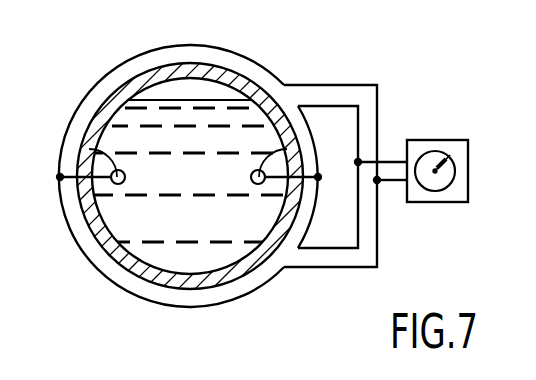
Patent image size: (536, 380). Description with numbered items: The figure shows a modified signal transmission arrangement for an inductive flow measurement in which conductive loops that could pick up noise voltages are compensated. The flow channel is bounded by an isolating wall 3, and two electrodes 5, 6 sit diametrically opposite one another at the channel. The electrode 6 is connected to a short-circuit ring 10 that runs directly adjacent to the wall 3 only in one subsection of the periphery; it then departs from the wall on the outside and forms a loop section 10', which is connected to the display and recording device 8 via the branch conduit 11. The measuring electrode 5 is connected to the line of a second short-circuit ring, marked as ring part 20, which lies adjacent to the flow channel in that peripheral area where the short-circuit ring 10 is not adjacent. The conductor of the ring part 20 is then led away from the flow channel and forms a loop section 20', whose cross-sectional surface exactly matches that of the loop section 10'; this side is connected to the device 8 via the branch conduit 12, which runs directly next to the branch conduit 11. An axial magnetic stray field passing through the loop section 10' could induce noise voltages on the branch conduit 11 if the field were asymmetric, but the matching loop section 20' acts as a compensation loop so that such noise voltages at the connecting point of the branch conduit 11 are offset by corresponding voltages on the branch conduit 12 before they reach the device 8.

The short-circuit ring 10 is at (167, 176).
The loop section 10' is at (330, 140).
The isolating wall 3 is at (128, 261).
The measuring electrode 5 is at (262, 154).
The electrode 6 is at (78, 153).
The display and recording device 8 is at (452, 140).
The branch conduit 11 is at (399, 182).
The branch conduit 12 is at (392, 160).
The ring part 20 is at (324, 210).
The loop section 20' is at (360, 198).